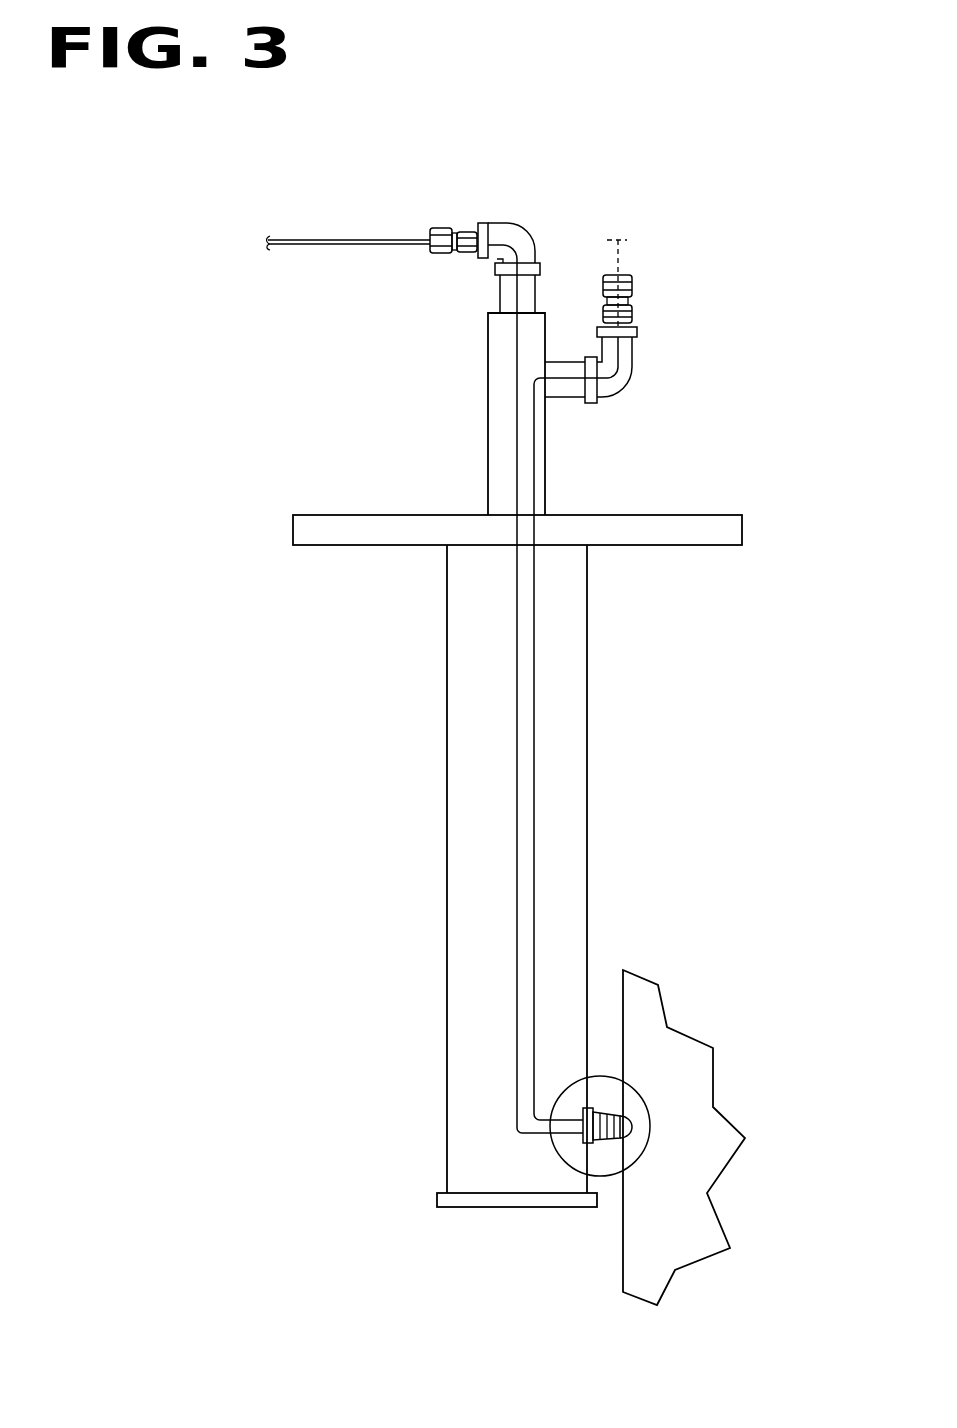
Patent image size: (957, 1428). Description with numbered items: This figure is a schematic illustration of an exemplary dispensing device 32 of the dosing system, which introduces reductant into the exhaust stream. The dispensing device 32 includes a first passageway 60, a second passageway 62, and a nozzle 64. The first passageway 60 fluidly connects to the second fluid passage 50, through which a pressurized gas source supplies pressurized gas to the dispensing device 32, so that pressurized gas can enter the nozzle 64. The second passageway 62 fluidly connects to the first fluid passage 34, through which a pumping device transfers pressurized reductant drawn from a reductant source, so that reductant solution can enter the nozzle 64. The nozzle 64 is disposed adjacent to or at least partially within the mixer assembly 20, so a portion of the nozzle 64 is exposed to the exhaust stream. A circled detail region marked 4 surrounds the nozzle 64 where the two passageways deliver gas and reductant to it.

The mixer assembly 20 is at (697, 1057).
The dispensing device 32 is at (587, 882).
The first fluid passage 34 is at (365, 240).
The second fluid passage 50 is at (618, 258).
The first passageway 60 is at (535, 723).
The second passageway 62 is at (517, 652).
The nozzle 64 is at (610, 1145).
The detail view indicator 4 is at (588, 1074).